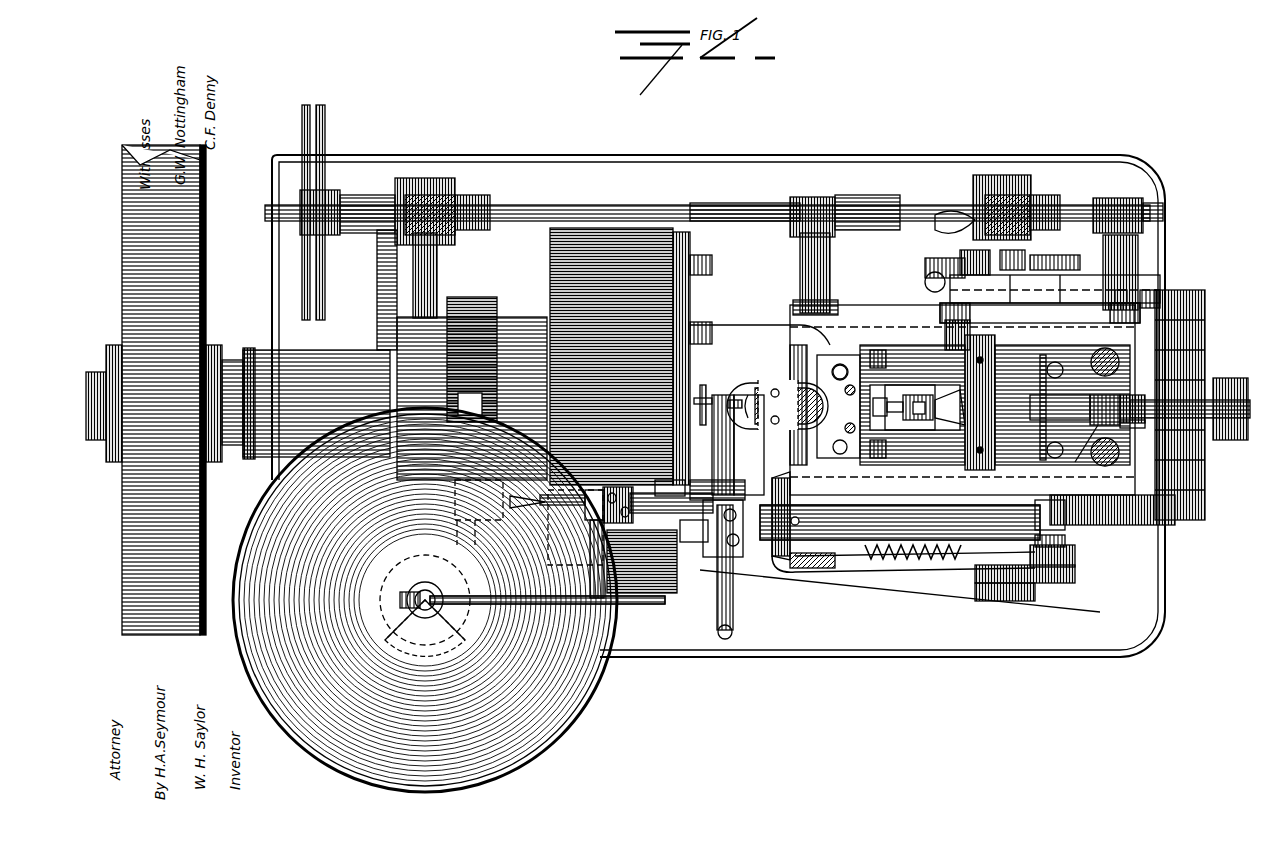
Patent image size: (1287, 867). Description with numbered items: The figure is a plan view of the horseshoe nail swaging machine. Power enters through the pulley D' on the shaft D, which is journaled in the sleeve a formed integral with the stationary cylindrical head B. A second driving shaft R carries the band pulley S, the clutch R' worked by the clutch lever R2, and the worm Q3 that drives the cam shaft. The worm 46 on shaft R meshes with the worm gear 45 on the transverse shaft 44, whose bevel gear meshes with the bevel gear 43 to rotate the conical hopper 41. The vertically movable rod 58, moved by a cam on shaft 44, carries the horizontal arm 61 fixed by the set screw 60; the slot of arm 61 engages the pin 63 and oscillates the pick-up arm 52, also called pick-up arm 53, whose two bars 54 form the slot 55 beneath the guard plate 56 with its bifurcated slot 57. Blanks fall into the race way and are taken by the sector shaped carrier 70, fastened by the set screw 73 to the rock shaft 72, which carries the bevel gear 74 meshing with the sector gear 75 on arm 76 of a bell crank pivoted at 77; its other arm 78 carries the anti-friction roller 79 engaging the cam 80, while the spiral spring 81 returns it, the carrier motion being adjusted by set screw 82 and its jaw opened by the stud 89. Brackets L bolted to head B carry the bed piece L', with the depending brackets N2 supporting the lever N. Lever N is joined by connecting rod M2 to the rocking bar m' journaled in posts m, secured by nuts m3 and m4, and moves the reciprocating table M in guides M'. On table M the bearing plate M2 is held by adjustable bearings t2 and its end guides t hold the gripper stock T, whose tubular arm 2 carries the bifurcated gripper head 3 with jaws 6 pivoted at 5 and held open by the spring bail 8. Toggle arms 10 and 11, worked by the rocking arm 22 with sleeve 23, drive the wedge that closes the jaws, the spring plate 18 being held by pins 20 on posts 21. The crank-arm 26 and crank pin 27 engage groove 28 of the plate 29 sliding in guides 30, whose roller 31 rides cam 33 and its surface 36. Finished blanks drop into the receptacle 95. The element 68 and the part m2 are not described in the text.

The receptacle 95 is at (258, 305).
The hopper 41 is at (425, 600).
The worm gear 45 is at (515, 205).
The worm 46 is at (440, 235).
The transverse shaft 44 is at (437, 280).
The band pulley S is at (320, 212).
The cylindrical head B is at (585, 235).
The driving shaft R is at (745, 203).
The clutch R' is at (814, 246).
The clutch lever R2 is at (880, 210).
The worm Q3 is at (1030, 195).
The shaft D is at (311, 395).
The pulley D' is at (164, 390).
The sleeve a is at (1000, 605).
The reciprocating table M is at (1008, 400).
The guides M' is at (837, 405).
The connecting rod / bearing plate M2 is at (915, 432).
The lever N is at (1242, 432).
The depending brackets N2 is at (1190, 303).
The gripper head or stock T is at (777, 405).
The brackets L is at (717, 445).
The bed piece or frame L' is at (760, 323).
The horizontal arm 61 is at (532, 601).
The set screw 60 is at (398, 572).
The bevel gear 43 is at (410, 628).
The vertically movable rod 58 is at (440, 620).
The bars or plates 54 is at (479, 506).
The slot 55 is at (507, 515).
The guard plate 56 is at (586, 505).
The pick-up arm 52 is at (575, 527).
The pin 63 is at (586, 559).
The slot 57 is at (680, 500).
The block 68 is at (681, 511).
The set screw 82 is at (732, 628).
The bevel gear 74 is at (781, 508).
The sector gear 75 is at (795, 570).
The arm 76 is at (912, 572).
The set screw 73 is at (850, 538).
The rock shaft 72 is at (1050, 515).
The cam 80 is at (1065, 541).
The anti-friction roller 79 is at (1075, 556).
The arm 78 is at (1075, 575).
The pivot 77 is at (995, 600).
The spiral spring 81 is at (841, 471).
The stud 89 is at (702, 396).
The pick-up arm 53 is at (712, 440).
The sector shaped carrier 70 is at (749, 445).
The pivots 5 is at (775, 389).
The gripping jaws 6 is at (746, 405).
The bifurcated gripper head 3 is at (765, 406).
The spring bail 8 is at (835, 372).
The end bearings or guides t is at (850, 398).
The laterally adjustable bearings t2 is at (872, 404).
The tubular arm 2 is at (877, 398).
The toggle lever arms 10 is at (886, 415).
The toggle arm 11 is at (918, 403).
The rocking arm 22 is at (946, 407).
The sleeve 23 is at (975, 390).
The posts 21 is at (1050, 370).
The pins 20 is at (1040, 416).
The spring plate 18 is at (1060, 401).
The posts m is at (1120, 405).
The rocking bar m' is at (1105, 401).
The collar m2 is at (1140, 397).
The screw threaded end / nut m3 is at (1098, 425).
The nut m4 is at (1128, 424).
The cam 33 is at (945, 264).
The guides 30 is at (1062, 252).
The cam surface 36 is at (1066, 263).
The vertically reciprocating frame or plate 29 is at (1055, 289).
The roller 31 is at (1019, 288).
The groove 28 is at (1022, 291).
The crank pin 27 is at (1126, 289).
The crank-arm 26 is at (1040, 313).